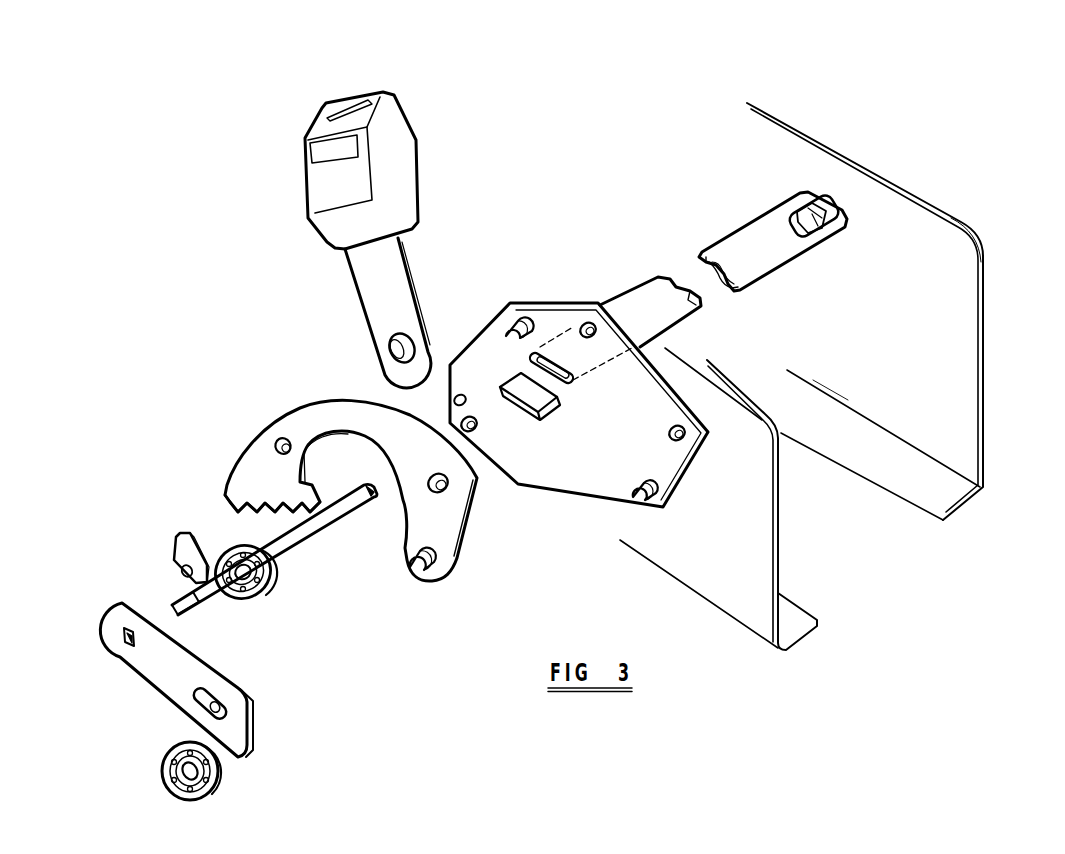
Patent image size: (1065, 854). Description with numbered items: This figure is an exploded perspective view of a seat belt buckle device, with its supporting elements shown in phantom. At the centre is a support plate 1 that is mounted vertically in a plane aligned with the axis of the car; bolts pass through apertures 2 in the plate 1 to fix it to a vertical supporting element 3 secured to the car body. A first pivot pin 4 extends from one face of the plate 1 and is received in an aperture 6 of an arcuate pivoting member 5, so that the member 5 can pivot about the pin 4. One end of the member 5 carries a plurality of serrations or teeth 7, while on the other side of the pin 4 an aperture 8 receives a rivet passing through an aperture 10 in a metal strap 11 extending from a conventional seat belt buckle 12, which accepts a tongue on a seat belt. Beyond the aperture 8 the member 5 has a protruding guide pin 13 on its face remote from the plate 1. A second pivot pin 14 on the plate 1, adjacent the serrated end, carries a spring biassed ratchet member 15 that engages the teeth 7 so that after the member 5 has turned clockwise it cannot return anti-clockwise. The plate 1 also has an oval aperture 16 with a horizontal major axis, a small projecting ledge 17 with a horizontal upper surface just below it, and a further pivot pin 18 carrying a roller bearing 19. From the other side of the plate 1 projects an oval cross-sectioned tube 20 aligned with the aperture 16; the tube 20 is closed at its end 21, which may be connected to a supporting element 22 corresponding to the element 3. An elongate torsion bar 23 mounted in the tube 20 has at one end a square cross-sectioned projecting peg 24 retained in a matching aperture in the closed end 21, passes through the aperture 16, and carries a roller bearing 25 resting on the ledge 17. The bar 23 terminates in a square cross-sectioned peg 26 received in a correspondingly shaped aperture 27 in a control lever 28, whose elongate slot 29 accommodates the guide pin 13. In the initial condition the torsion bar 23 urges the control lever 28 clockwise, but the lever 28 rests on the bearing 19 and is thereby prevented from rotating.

The support plate 1 is at (600, 488).
The apertures 2 is at (588, 322).
The vertical supporting element 3 is at (782, 522).
The first pivot pin 4 is at (514, 322).
The arcuate pivoting member 5 is at (302, 418).
The aperture 6 is at (273, 446).
The serrations or teeth 7 is at (240, 512).
The aperture 8 is at (447, 488).
The aperture 10 is at (405, 348).
The metal strap 11 is at (390, 285).
The seat belt buckle 12 is at (403, 174).
The guide pin 13 is at (429, 568).
The second pivot pin 14 is at (452, 400).
The spring biassed ratchet member 15 is at (172, 558).
The oval aperture 16 is at (578, 374).
The projecting ledge 17 is at (553, 412).
The further pivot pin 18 is at (650, 494).
The roller bearing 19 is at (220, 776).
The oval cross-sectioned tube 20 is at (732, 240).
The closed end 21 is at (810, 200).
The supporting element 22 is at (958, 262).
The torsion bar 23 is at (330, 515).
The square cross-sectioned projecting peg 24 is at (830, 208).
The roller bearing 25 is at (266, 582).
The square cross-sectioned peg 26 is at (179, 609).
The aperture 27 is at (126, 642).
The control lever 28 is at (163, 678).
The elongate slot 29 is at (216, 701).